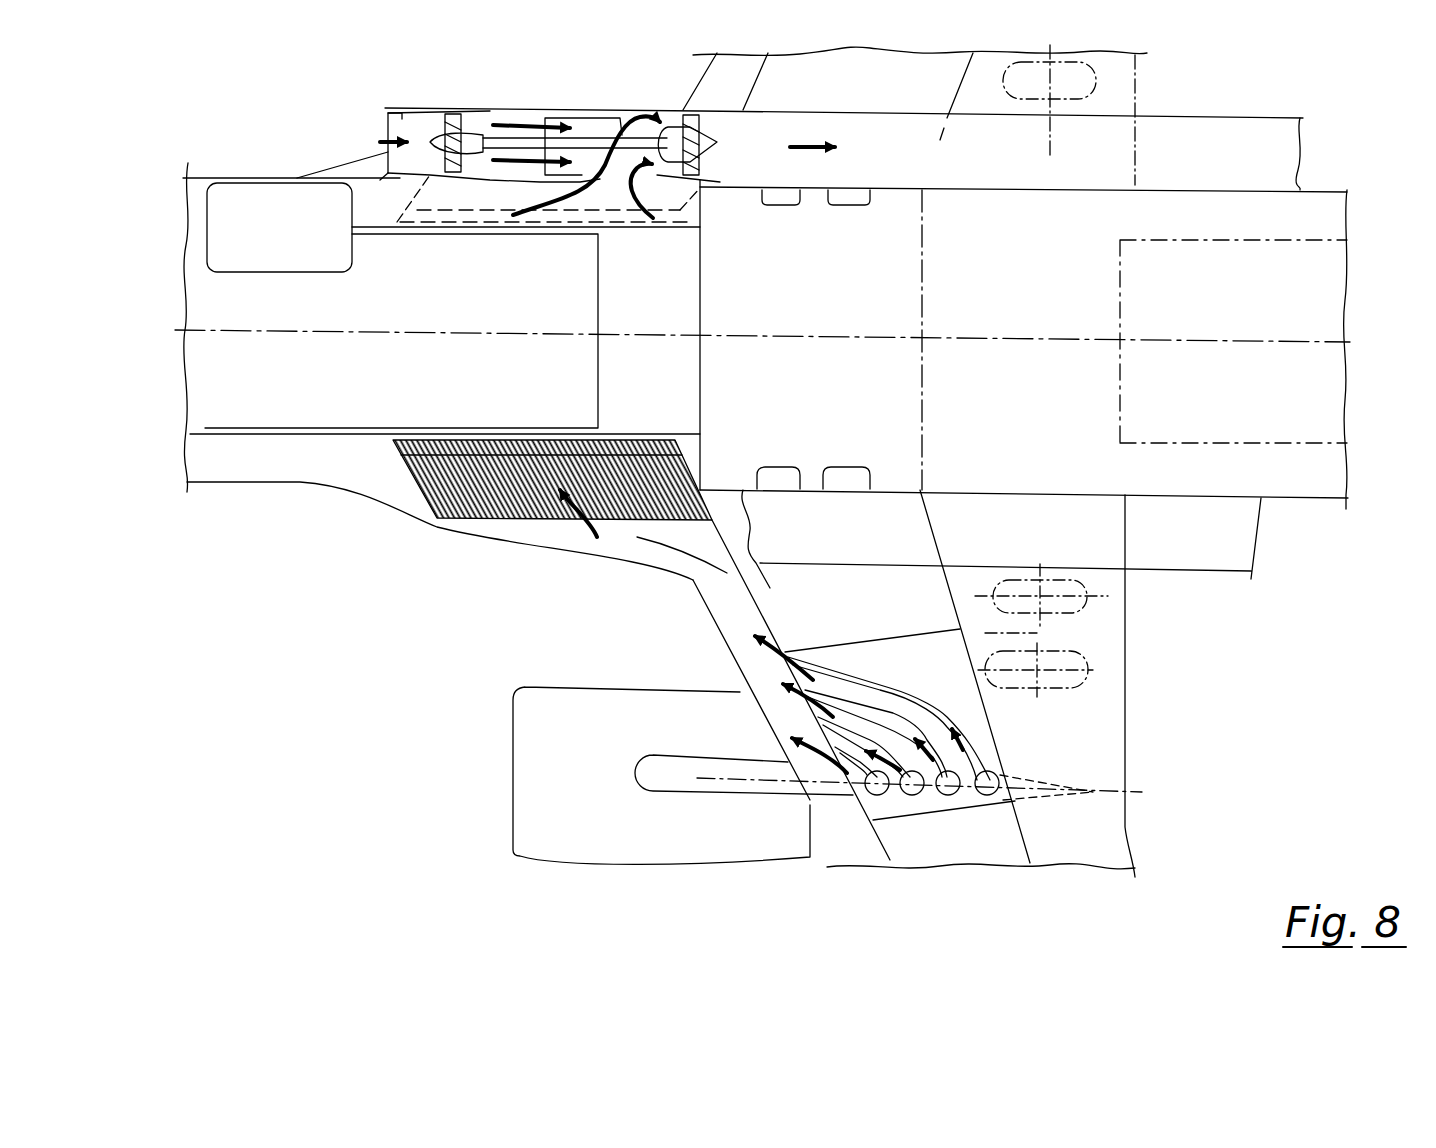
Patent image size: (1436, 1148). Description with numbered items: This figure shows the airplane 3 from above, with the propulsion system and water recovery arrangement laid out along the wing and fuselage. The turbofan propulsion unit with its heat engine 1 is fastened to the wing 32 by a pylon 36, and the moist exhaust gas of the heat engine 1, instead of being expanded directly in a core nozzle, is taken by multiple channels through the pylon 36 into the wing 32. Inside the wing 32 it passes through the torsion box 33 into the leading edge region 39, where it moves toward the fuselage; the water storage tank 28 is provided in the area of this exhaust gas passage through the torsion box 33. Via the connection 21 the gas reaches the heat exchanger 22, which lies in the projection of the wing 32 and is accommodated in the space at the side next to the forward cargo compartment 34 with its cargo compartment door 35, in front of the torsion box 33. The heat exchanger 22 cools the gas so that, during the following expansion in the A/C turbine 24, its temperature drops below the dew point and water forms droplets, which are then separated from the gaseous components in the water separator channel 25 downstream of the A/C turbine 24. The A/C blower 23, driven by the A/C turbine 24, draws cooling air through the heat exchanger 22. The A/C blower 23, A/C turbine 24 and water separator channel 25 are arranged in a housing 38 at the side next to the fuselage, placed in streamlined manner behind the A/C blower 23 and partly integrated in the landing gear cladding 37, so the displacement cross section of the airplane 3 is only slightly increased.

The heat engine 1 is at (523, 868).
The airplane 3 is at (221, 512).
The connection 21 is at (648, 545).
The heat exchanger 22 is at (498, 493).
The A/C blower 23 is at (447, 115).
The A/C turbine 24 is at (683, 110).
The water separator channel 25 is at (1195, 150).
The water storage tank 28 is at (955, 688).
The wing 32 is at (1098, 876).
The torsion box 33 is at (1017, 827).
The cargo compartment 34 is at (318, 395).
The cargo compartment door 35 is at (263, 212).
The pylon 36 is at (757, 783).
The landing gear cladding 37 is at (388, 517).
The housing 38 is at (398, 112).
The leading edge region 39 is at (845, 843).